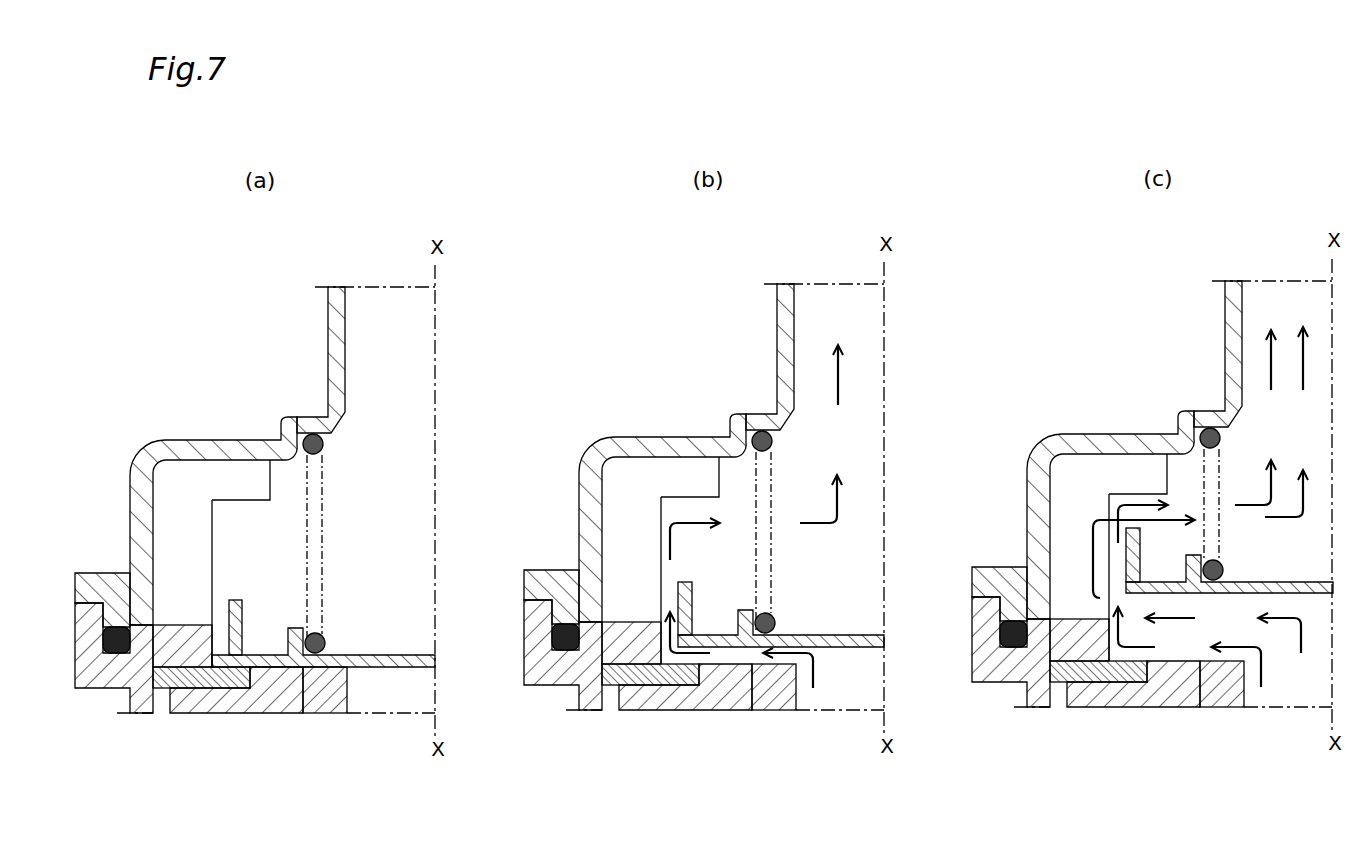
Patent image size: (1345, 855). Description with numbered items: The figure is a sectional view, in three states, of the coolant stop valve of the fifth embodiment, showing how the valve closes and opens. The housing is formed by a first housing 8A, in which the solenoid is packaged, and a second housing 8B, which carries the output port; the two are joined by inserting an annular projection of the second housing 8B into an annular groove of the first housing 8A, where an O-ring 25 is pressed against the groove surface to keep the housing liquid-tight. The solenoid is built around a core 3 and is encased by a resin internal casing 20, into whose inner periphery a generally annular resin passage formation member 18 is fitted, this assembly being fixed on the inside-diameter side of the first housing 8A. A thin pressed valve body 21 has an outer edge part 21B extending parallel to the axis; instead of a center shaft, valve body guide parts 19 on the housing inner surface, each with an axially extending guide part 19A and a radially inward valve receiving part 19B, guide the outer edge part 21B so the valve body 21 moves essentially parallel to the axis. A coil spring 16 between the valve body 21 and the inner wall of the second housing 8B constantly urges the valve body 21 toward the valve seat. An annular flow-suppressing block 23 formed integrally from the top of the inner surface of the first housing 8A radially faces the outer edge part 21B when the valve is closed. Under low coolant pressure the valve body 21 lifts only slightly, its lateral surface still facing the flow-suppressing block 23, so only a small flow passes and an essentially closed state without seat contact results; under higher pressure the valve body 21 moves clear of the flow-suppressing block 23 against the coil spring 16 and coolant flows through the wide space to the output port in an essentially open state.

The core 3 is at (328, 373).
The valve body guide part 19 is at (176, 487).
The guide part 19A is at (213, 583).
The valve receiving part 19B is at (253, 512).
The coil spring 16 is at (326, 643).
The second housing 8B is at (108, 570).
The first housing 8A is at (75, 672).
The O-ring 25 is at (95, 660).
The flow-suppressing block 23 is at (187, 623).
The internal casing 20 is at (237, 713).
The passage formation member 18 is at (325, 708).
The valve body 21 is at (415, 653).
The outer edge part 21B is at (243, 633).